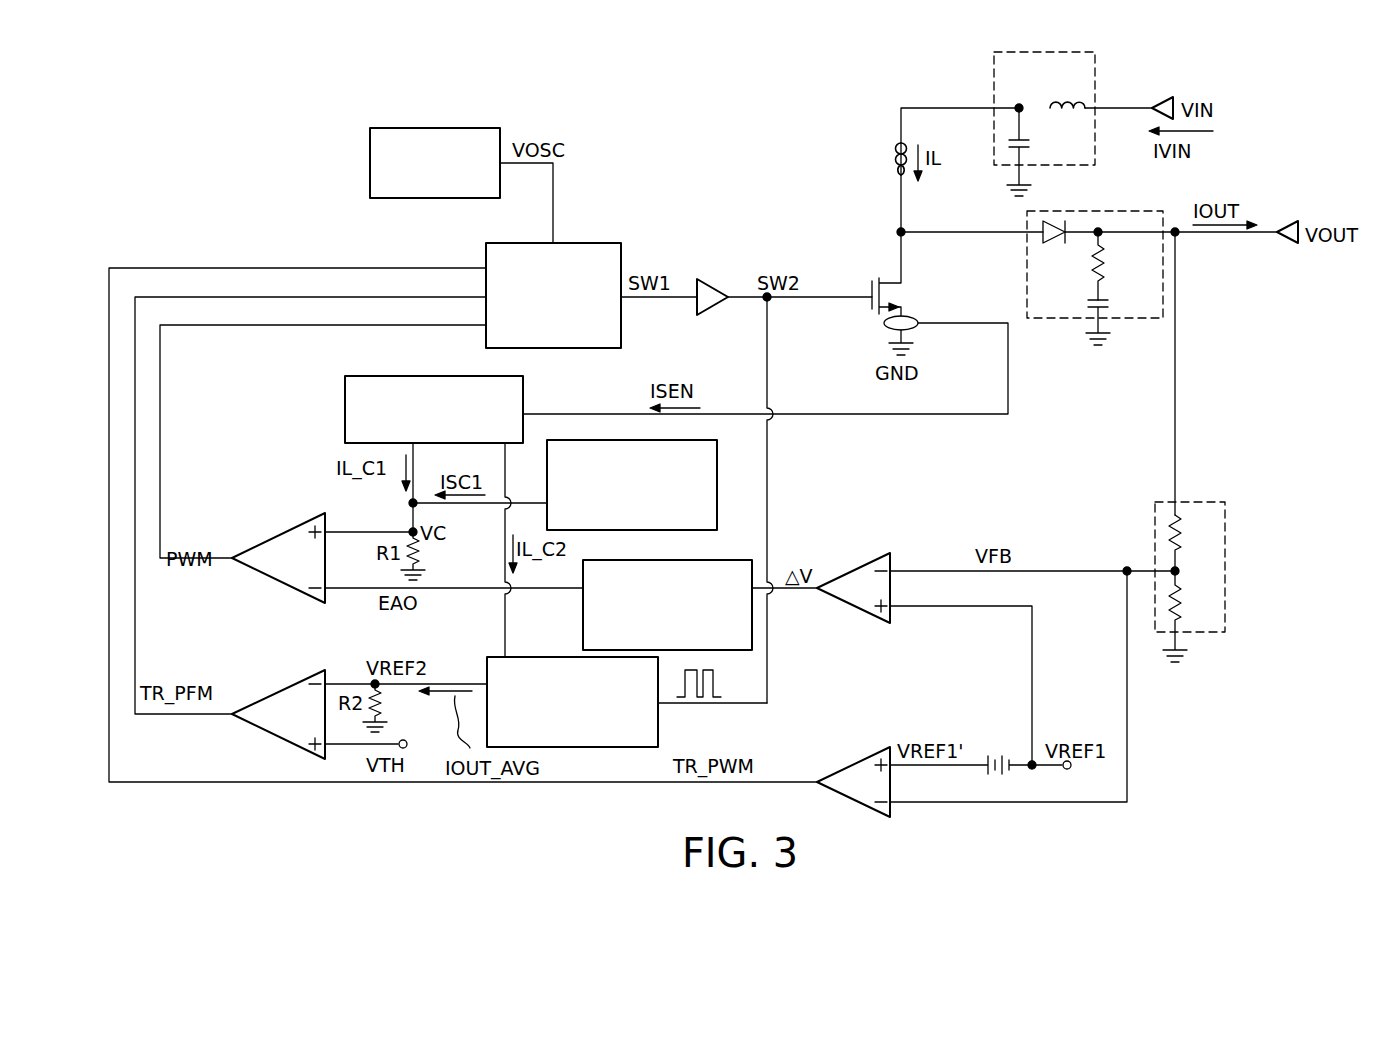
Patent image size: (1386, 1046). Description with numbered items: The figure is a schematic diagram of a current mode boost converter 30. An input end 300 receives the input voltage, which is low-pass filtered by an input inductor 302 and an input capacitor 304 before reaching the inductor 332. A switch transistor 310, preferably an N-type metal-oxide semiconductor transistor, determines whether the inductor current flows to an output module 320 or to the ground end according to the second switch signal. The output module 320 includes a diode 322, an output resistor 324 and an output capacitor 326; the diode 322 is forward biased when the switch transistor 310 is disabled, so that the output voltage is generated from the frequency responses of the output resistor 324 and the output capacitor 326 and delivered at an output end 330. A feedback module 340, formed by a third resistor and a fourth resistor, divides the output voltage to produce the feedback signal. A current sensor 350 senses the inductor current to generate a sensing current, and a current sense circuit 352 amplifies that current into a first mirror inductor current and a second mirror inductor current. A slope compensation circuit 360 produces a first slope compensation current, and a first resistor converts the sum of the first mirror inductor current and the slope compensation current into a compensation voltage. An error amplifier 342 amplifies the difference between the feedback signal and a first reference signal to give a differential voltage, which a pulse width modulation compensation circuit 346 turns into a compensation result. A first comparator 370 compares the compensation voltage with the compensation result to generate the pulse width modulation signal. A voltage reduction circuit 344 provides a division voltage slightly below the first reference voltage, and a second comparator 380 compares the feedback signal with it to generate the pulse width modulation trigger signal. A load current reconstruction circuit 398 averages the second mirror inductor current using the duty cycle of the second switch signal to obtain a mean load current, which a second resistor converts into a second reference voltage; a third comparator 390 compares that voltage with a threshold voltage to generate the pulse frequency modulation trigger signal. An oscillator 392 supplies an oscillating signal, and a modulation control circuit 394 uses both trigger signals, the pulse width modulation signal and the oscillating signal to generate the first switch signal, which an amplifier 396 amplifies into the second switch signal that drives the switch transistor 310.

The boost converter 30 is at (1280, 102).
The input end 300 is at (1161, 97).
The input inductor 302 is at (1068, 103).
The input capacitor 304 is at (1028, 143).
The switch transistor 310 is at (858, 300).
The output module 320 is at (1128, 210).
The diode 322 is at (1052, 245).
The output resistor 324 is at (1106, 263).
The output capacitor 326 is at (1108, 304).
The output end 330 is at (1283, 221).
The inductor 332 is at (893, 157).
The feedback module 340 is at (1208, 502).
The error amplifier 342 is at (853, 570).
The voltage reduction circuit 344 is at (997, 750).
The PWM compensation circuit 346 is at (733, 560).
The current sensor 350 is at (918, 321).
The current sense circuit 352 is at (435, 376).
The slope compensation circuit 360 is at (719, 470).
The first comparator 370 is at (281, 530).
The second comparator 380 is at (853, 764).
The third comparator 390 is at (281, 691).
The oscillator 392 is at (471, 128).
The modulation control circuit 394 is at (606, 243).
The amplifier 396 is at (715, 271).
The load current reconstruction circuit 398 is at (536, 648).